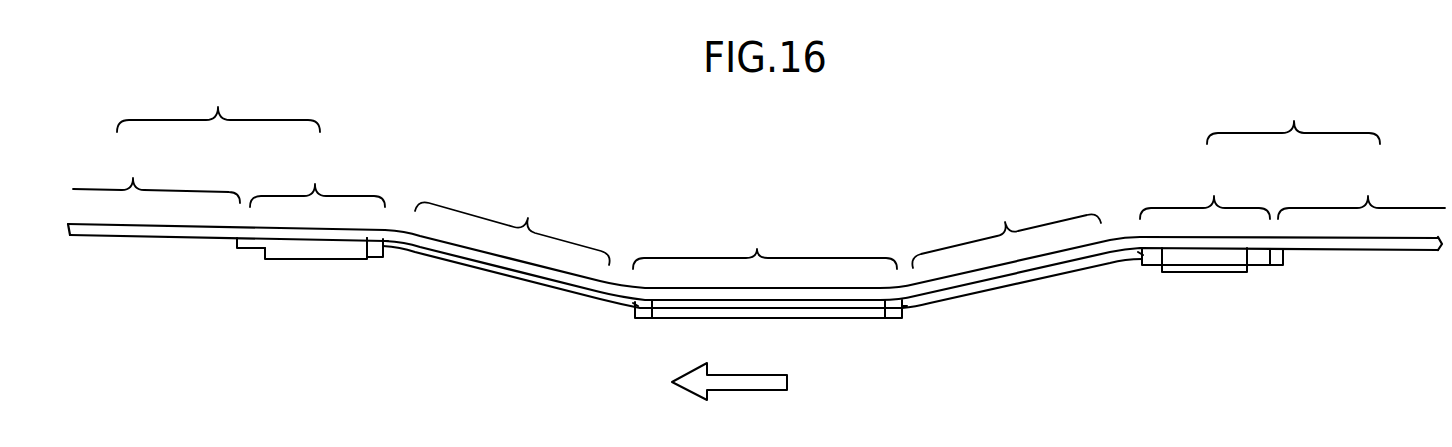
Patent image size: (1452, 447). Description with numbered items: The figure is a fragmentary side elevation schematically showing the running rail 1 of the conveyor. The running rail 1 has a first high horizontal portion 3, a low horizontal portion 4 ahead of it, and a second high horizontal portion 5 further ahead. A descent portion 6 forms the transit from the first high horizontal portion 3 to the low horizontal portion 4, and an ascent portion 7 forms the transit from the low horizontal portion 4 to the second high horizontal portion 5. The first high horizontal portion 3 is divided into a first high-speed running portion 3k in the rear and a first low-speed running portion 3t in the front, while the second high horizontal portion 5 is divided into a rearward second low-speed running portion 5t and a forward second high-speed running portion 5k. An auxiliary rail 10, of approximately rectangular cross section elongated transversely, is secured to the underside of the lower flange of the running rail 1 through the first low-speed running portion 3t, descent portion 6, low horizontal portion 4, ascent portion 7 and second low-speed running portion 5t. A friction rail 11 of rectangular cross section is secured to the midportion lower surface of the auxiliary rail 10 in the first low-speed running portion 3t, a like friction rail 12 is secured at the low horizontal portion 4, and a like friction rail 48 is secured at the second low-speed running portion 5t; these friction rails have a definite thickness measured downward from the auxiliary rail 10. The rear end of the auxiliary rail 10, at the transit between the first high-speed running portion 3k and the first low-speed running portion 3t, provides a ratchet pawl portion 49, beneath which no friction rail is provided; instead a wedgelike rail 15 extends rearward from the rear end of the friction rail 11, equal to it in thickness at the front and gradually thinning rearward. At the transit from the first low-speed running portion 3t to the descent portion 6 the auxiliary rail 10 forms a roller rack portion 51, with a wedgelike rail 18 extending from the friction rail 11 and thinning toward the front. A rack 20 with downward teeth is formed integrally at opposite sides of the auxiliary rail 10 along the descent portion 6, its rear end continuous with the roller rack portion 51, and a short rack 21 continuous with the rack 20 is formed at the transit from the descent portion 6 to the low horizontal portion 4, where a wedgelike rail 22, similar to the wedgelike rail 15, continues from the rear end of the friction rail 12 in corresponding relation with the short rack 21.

The running rail 1 is at (110, 231).
The first high horizontal portion 3 is at (1293, 113).
The first low-speed running portion 3t is at (1205, 188).
The first high-speed running portion 3k is at (1361, 188).
The low horizontal portion 4 is at (765, 241).
The second high horizontal portion 5 is at (218, 103).
The second high-speed running portion 5k is at (156, 172).
The second low-speed running portion 5t is at (317, 177).
The descent portion 6 is at (1006, 225).
The ascent portion 7 is at (512, 223).
The auxiliary rail 10 is at (237, 249).
The friction rail 11 is at (1203, 273).
The friction rail 12 is at (805, 318).
The wedgelike rail 15 is at (1252, 273).
The wedgelike rail 18 is at (643, 319).
The rack 20 is at (508, 276).
The short rack 21 is at (386, 244).
The wedgelike rail 22 is at (377, 258).
The friction rail 48 is at (315, 260).
The ratchet pawl portion 49 is at (1274, 265).
The roller rack portion 51 is at (633, 305).